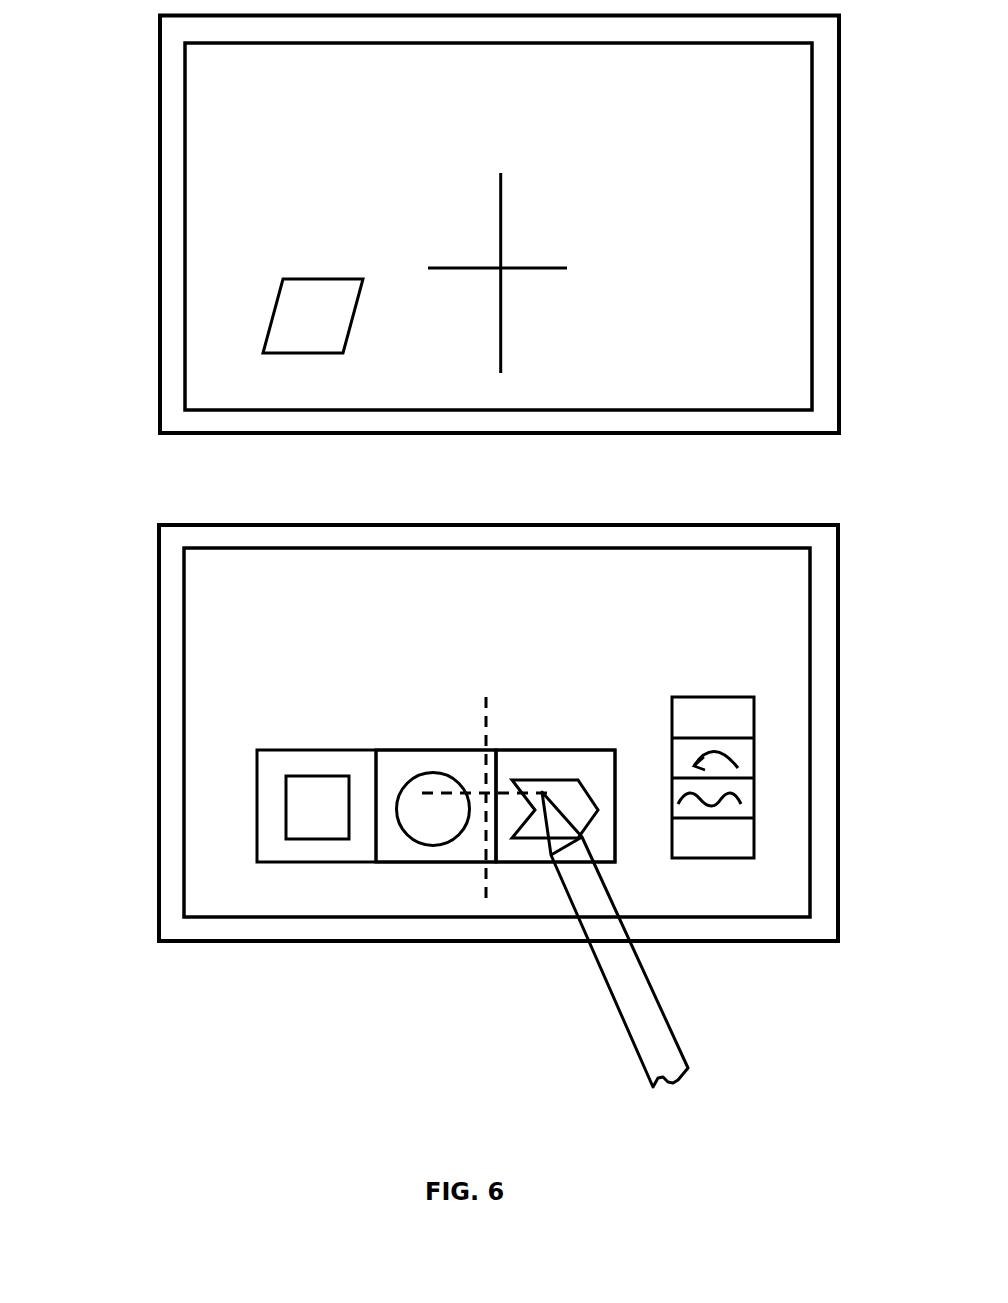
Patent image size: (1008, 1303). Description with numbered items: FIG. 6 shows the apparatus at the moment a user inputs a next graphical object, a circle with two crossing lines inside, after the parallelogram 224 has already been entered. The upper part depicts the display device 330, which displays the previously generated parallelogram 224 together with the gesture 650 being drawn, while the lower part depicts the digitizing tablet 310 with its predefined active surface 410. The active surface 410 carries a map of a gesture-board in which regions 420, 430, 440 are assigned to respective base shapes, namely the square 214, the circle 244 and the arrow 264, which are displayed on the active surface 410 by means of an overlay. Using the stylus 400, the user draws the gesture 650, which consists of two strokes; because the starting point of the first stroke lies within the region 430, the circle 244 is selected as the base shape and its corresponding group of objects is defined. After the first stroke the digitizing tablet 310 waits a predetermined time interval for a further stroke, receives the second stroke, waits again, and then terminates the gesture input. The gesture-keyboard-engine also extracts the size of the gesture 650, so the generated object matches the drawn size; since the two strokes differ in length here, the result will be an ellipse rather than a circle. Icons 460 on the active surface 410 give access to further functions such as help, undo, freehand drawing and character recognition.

The display device 330 is at (438, 225).
The parallelogram 224 is at (203, 326).
The gesture 650 is at (666, 536).
The digitizing tablet 310 is at (427, 733).
The active surface 410 is at (435, 732).
The region 420 is at (326, 806).
The square 214 is at (260, 909).
The circle 244 is at (375, 908).
The region 430 is at (434, 909).
The region 440 is at (629, 880).
The arrow 264 is at (540, 937).
The stylus 400 is at (652, 939).
The icons 460 is at (793, 777).